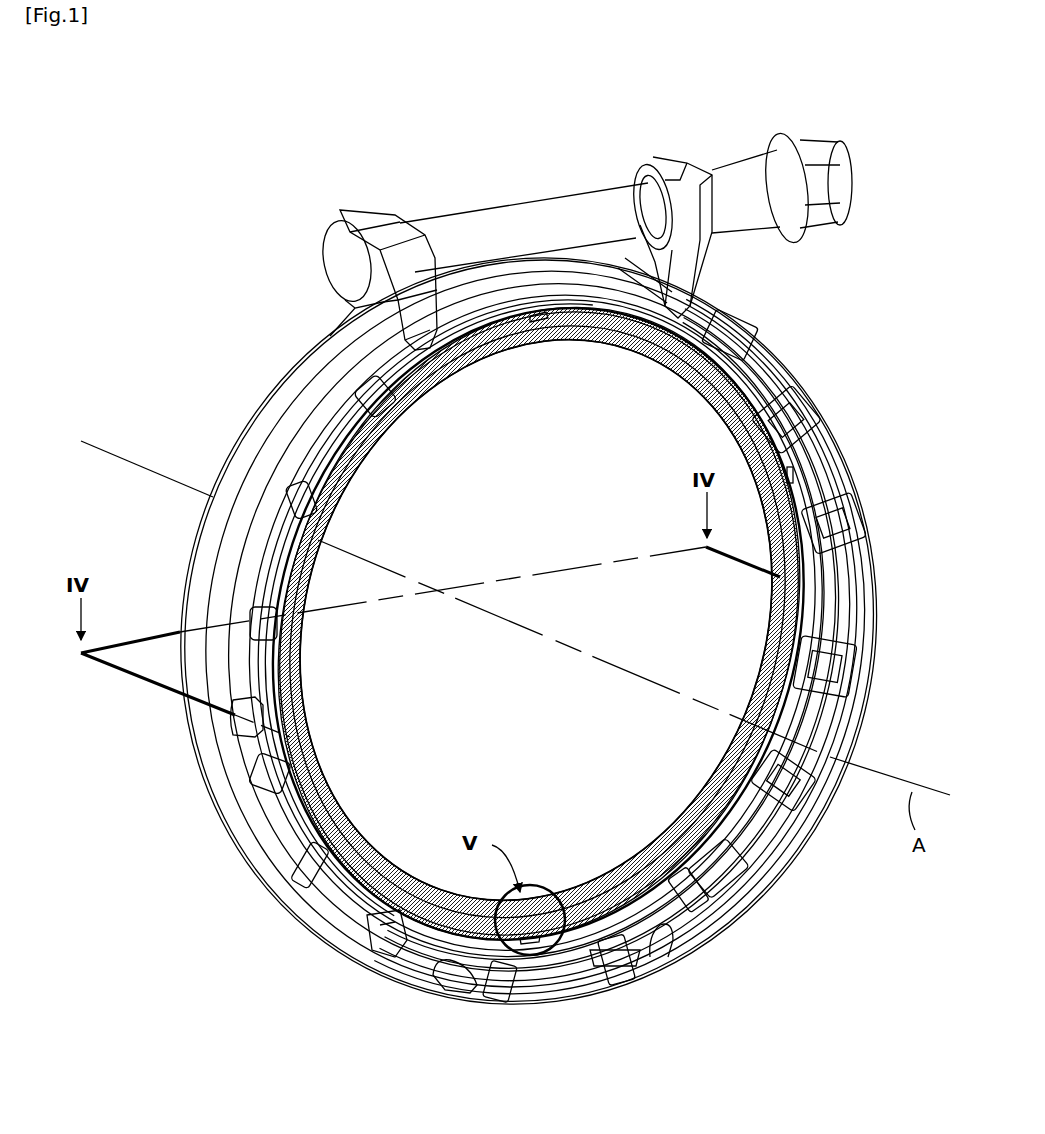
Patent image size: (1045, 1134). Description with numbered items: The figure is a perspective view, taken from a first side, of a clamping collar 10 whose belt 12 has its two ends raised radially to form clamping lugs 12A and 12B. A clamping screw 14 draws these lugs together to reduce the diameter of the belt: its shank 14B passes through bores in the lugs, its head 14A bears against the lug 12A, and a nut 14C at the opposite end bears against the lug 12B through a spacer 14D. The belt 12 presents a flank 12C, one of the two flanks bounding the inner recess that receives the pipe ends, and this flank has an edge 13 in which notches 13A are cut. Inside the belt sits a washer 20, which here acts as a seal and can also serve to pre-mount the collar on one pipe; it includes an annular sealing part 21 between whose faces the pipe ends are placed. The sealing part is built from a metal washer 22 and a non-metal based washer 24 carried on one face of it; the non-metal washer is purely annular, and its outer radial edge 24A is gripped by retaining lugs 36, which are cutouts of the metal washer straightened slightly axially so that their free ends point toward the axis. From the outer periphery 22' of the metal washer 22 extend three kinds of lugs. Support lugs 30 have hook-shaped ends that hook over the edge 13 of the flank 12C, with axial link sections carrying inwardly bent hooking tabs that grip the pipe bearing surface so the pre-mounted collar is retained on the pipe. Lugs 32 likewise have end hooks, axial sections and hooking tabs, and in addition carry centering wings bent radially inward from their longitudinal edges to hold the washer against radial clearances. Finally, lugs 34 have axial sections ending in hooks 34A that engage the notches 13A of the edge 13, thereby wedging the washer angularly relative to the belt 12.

The clamping collar 10 is at (528, 633).
The belt 12 is at (830, 388).
The clamping lug 12A is at (365, 215).
The clamping lug 12B is at (672, 170).
The flank 12C is at (265, 545).
The edge 13 is at (845, 462).
The notches 13A is at (513, 980).
The clamping screw 14 is at (559, 211).
The head 14A is at (336, 258).
The shank 14B is at (530, 215).
The nut 14C is at (835, 165).
The spacer 14D is at (735, 165).
The washer 20 is at (623, 395).
The annular sealing part 21 is at (505, 388).
The metal washer 22 is at (538, 624).
The outer periphery 22' is at (564, 290).
The non-metal based washer 24 is at (550, 345).
The outer radial edge 24A is at (667, 345).
The support lugs 30 is at (740, 330).
The lugs 32 is at (853, 668).
The lugs 34 is at (617, 1000).
The hooks 34A is at (620, 967).
The retaining lugs 36 is at (527, 935).